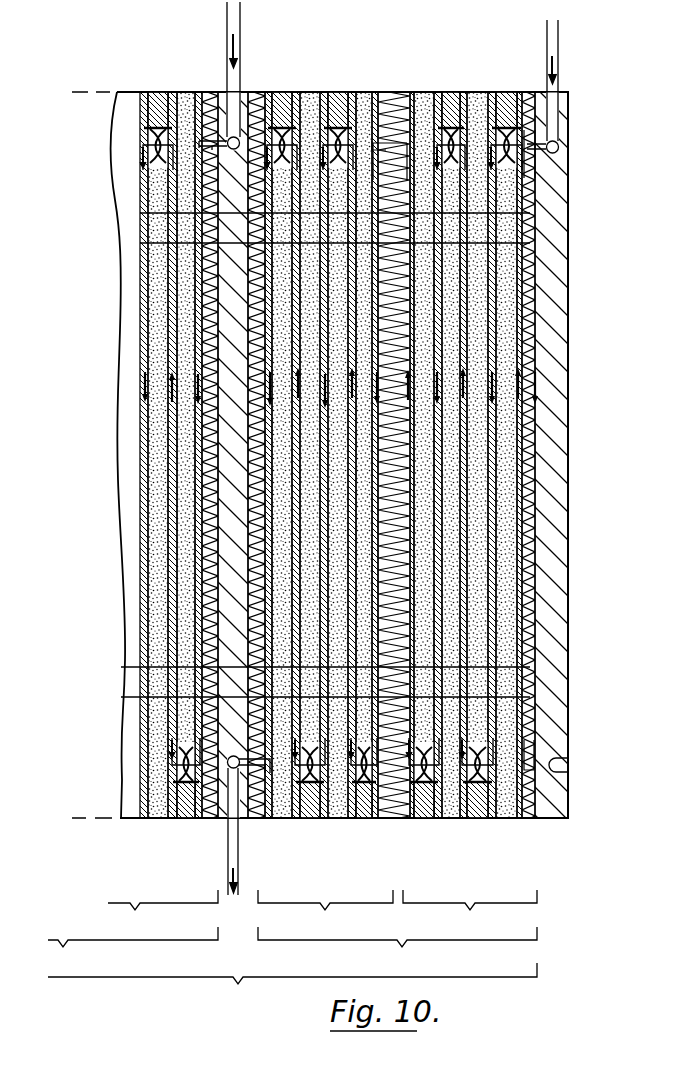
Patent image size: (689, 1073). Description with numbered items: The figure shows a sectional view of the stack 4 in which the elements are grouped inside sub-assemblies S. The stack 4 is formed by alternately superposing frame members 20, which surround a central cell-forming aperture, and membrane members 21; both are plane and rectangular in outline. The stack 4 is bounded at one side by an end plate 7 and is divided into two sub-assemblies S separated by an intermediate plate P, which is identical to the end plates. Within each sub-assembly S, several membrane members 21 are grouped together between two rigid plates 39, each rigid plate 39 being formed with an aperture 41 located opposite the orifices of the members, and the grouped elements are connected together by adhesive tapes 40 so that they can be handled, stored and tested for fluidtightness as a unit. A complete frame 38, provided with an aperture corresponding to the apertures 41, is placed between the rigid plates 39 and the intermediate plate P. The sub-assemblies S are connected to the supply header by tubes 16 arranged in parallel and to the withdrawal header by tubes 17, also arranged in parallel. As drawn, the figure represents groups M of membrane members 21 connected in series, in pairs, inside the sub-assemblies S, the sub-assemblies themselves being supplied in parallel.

The stack 4 is at (292, 988).
The end plate 7 is at (552, 313).
The tube 16 is at (548, 63).
The tube 17 is at (228, 855).
The frame member 20 is at (518, 93).
The membrane member 21 is at (449, 93).
The complete frame 38 is at (219, 92).
The rigid plate 39 is at (258, 100).
The adhesive tape 40 is at (118, 252).
The aperture 41 is at (372, 140).
The intermediate plate P is at (232, 513).
The group of membrane members M is at (322, 916).
The sub-assembly S is at (292, 954).